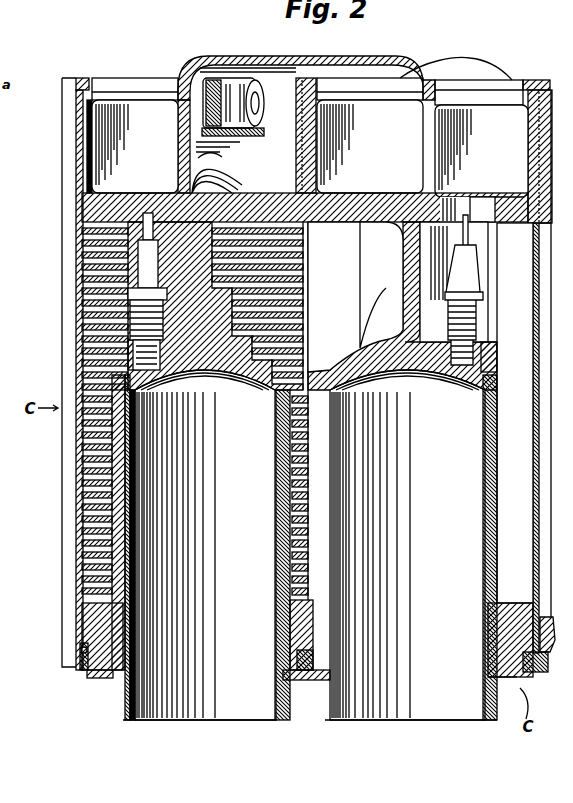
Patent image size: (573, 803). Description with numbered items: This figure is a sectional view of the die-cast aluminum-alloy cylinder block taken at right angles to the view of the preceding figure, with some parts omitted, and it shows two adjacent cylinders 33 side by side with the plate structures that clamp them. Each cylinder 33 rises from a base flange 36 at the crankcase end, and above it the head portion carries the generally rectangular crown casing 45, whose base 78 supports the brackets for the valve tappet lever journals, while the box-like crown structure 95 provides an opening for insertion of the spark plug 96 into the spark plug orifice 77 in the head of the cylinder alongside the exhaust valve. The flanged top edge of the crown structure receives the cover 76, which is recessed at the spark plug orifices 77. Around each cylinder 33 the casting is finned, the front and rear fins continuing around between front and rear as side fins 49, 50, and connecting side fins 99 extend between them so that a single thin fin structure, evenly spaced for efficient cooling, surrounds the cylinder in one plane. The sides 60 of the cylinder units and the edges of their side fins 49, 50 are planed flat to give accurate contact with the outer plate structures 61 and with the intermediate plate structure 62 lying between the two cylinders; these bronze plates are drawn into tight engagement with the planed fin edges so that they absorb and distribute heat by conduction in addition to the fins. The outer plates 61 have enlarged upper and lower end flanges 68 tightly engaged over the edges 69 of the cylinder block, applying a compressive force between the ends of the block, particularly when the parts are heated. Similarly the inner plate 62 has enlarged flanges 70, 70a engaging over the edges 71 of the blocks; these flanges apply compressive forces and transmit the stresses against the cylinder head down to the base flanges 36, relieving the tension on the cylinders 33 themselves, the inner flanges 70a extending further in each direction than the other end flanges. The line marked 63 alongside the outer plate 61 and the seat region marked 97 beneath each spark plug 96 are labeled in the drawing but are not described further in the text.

The cylinder 33 is at (285, 473).
The base flange 36 is at (100, 678).
The crown casing 45 is at (90, 193).
The side fin 49 is at (112, 492).
The side fin 50 is at (300, 524).
The sides of the cylinder units 60 is at (80, 255).
The outer plate structure 61 is at (80, 458).
The intermediate plate structure 62 is at (313, 346).
The outer casing line 63 is at (64, 319).
The end flange 68 is at (82, 78).
The edge of the cylinder block 69 is at (87, 103).
The flange 70 is at (318, 82).
The inner flange 70a is at (308, 682).
The edge of the cylinder block 71 is at (322, 115).
The cover 76 is at (188, 56).
The spark plug orifice 77 is at (119, 80).
The base of the crown structure 78 is at (110, 193).
The crown structure 95 is at (486, 199).
The spark plug 96 is at (498, 306).
The plug seat 97 is at (130, 352).
The connecting side fins 99 is at (80, 540).